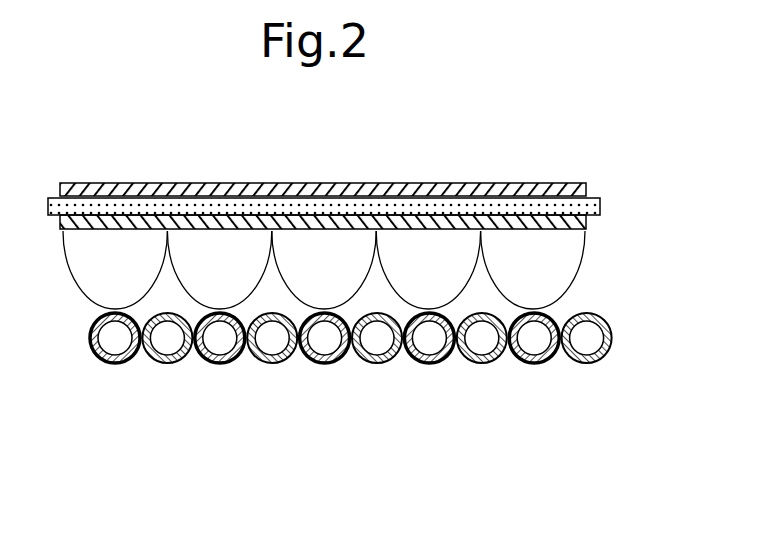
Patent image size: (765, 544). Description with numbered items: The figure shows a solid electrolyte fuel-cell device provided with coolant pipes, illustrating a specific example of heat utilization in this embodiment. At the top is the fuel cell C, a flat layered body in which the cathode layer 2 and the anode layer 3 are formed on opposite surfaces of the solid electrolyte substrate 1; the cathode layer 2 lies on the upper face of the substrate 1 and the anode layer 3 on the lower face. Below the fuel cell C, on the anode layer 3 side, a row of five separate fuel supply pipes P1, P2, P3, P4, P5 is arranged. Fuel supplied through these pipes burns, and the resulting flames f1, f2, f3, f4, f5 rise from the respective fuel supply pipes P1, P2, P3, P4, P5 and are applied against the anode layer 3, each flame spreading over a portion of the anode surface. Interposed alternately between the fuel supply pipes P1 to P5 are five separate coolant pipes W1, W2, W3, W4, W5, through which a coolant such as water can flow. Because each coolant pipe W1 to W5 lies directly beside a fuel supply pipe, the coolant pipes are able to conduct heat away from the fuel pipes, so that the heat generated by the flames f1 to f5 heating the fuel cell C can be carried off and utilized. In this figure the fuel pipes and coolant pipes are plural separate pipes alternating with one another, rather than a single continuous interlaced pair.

The fuel cell C is at (366, 170).
The solid electrolyte substrate 1 is at (600, 200).
The cathode layer 2 is at (586, 186).
The anode layer 3 is at (586, 225).
The flame f1 is at (115, 270).
The flame f2 is at (219, 270).
The flame f3 is at (324, 270).
The flame f4 is at (428, 270).
The flame f5 is at (533, 270).
The fuel supply pipe P1 is at (115, 363).
The fuel supply pipe P2 is at (220, 363).
The fuel supply pipe P3 is at (325, 363).
The fuel supply pipe P4 is at (429, 363).
The fuel supply pipe P5 is at (534, 363).
The coolant pipe W1 is at (167, 363).
The coolant pipe W2 is at (272, 363).
The coolant pipe W3 is at (377, 363).
The coolant pipe W4 is at (482, 363).
The coolant pipe W5 is at (587, 363).